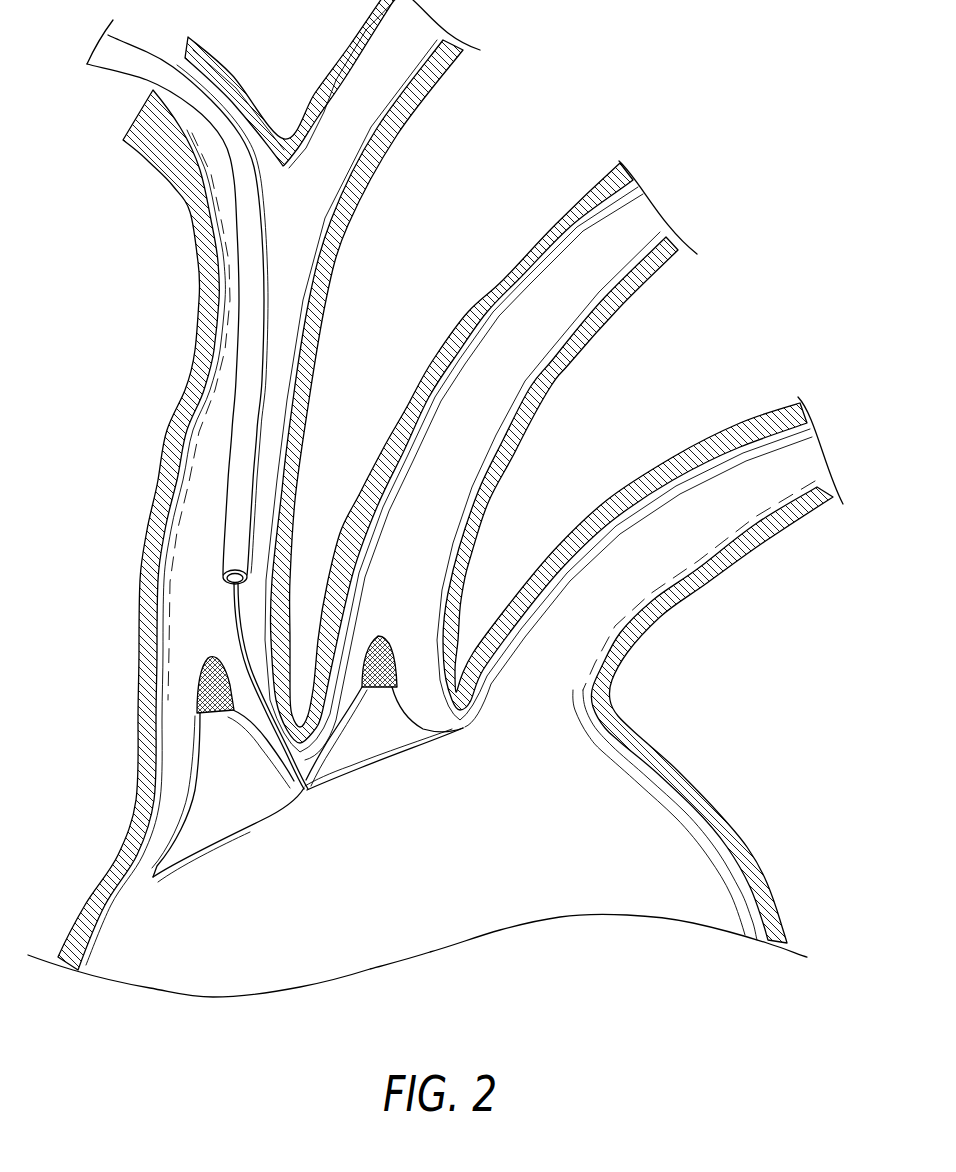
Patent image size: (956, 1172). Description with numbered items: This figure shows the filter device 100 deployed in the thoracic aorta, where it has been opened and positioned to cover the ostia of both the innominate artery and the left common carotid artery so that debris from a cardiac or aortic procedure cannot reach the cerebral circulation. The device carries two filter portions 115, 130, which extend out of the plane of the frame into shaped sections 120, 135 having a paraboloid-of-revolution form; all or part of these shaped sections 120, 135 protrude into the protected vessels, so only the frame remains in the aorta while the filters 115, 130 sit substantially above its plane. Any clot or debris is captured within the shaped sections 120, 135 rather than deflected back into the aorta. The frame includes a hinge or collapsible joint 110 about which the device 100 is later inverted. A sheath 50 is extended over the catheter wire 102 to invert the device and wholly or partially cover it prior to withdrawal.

The sheath 50 is at (262, 328).
The catheter wire 102 is at (236, 632).
The filter device 100 is at (297, 729).
The hinge or collapsible joint 110 is at (314, 796).
The filter portion 115 is at (210, 812).
The shaped section 120 is at (210, 658).
The filter portion 130 is at (403, 737).
The shaped section 135 is at (380, 637).